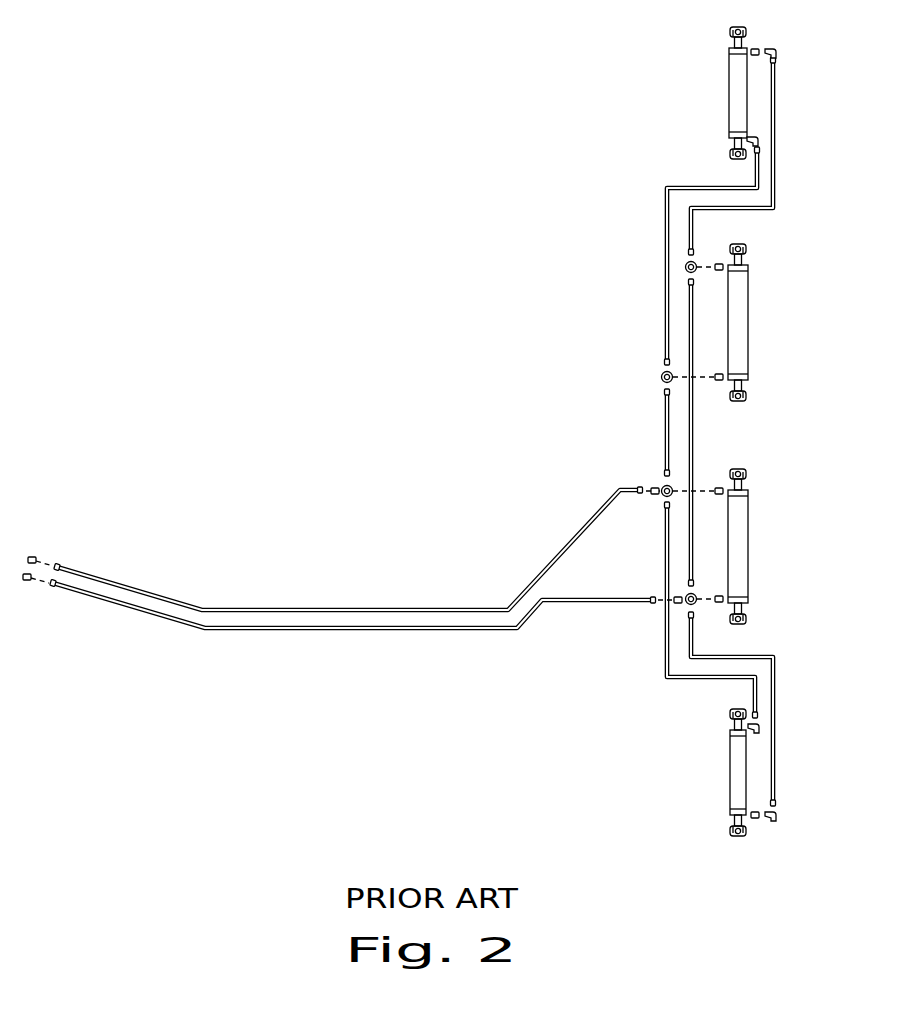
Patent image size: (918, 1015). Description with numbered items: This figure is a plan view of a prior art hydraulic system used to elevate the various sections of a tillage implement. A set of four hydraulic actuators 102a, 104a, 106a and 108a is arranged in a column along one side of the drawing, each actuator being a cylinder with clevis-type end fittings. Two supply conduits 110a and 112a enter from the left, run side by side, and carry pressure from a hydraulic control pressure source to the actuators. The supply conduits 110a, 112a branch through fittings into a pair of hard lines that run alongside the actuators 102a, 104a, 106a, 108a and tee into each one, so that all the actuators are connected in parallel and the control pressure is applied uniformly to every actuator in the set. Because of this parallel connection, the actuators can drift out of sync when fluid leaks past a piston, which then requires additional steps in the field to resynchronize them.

The actuator 102a is at (732, 98).
The actuator 104a is at (743, 300).
The actuator 106a is at (743, 535).
The actuator 108a is at (733, 785).
The supply conduit 110a is at (92, 577).
The supply conduit 112a is at (125, 605).